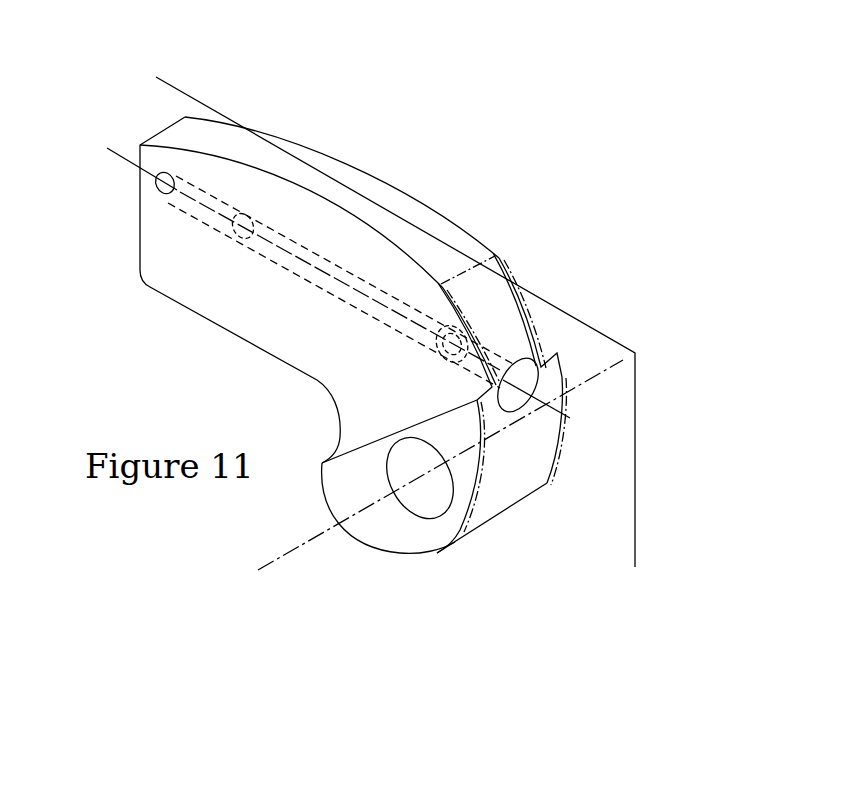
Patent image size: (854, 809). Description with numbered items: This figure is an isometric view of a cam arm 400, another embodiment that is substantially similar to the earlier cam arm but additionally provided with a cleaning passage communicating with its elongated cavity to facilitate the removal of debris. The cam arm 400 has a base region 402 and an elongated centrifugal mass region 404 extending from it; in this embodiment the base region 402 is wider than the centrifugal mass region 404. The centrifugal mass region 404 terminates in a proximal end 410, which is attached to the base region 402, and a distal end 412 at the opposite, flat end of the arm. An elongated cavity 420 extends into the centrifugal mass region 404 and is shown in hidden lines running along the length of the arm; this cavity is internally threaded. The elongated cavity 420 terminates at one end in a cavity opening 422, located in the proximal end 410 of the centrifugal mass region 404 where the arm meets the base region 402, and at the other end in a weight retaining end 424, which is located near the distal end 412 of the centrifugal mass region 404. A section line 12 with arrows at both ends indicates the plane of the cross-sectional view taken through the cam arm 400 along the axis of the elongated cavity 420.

The section line 12- 12 is at (248, 22).
The cam arm 400 is at (520, 193).
The base region 402 is at (494, 513).
The centrifugal mass region 404 is at (345, 157).
The proximal end 410 is at (503, 322).
The distal end 412 is at (152, 230).
The elongated cavity 420 is at (337, 268).
The cavity opening 422 is at (528, 380).
The weight retaining end 424 is at (233, 232).